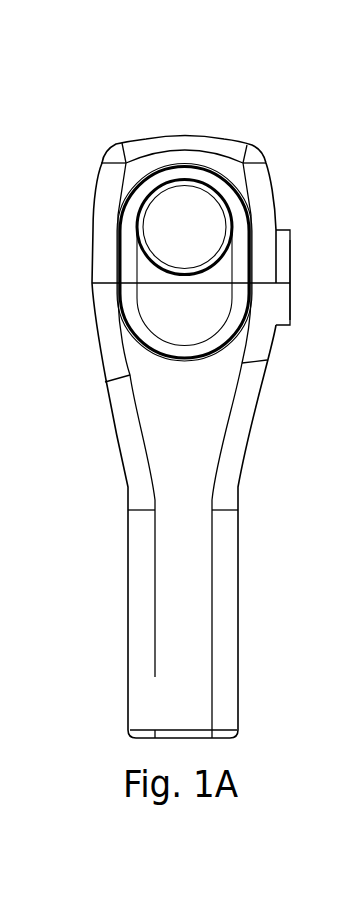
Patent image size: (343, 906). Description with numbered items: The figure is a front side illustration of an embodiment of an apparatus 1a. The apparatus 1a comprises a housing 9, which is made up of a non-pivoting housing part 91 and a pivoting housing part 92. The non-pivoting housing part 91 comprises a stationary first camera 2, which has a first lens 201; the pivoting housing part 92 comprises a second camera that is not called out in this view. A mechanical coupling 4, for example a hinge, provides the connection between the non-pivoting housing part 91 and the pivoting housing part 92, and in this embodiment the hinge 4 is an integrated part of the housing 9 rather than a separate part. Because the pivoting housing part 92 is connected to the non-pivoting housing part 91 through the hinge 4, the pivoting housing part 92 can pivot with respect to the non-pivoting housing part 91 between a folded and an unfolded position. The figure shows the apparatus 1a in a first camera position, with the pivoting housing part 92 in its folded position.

The apparatus 1a is at (137, 102).
The housing 9 is at (178, 121).
The non-pivoting housing part 91 is at (231, 154).
The pivoting housing part 92 is at (283, 250).
The mechanical coupling 4 is at (293, 278).
The stationary first camera 2 is at (212, 273).
The first lens 201 is at (165, 240).